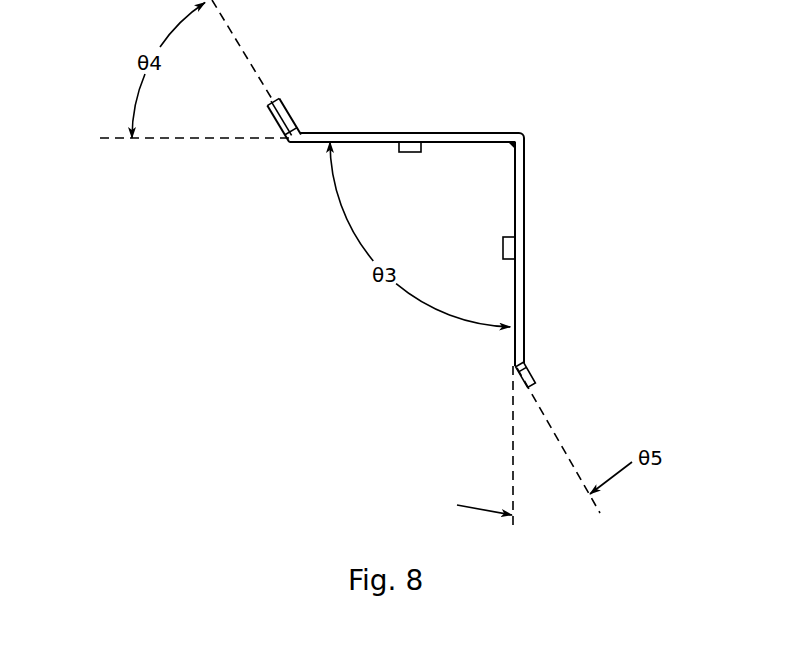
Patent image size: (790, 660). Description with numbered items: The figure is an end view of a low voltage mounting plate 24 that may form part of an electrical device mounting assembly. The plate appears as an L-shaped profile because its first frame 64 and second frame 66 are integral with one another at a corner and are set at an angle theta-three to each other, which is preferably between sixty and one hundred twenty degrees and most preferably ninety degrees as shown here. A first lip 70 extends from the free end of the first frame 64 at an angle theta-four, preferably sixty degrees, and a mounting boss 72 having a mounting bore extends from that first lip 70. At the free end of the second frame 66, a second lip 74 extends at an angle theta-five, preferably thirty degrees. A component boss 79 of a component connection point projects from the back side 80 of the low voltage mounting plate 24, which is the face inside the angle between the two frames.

The low voltage mounting plate 24 is at (582, 143).
The first frame 64 is at (412, 137).
The second frame 66 is at (516, 247).
The first lip 70 is at (287, 113).
The mounting boss 72 is at (295, 103).
The second lip 74 is at (530, 376).
The component boss 79 is at (409, 152).
The back side 80 is at (464, 142).